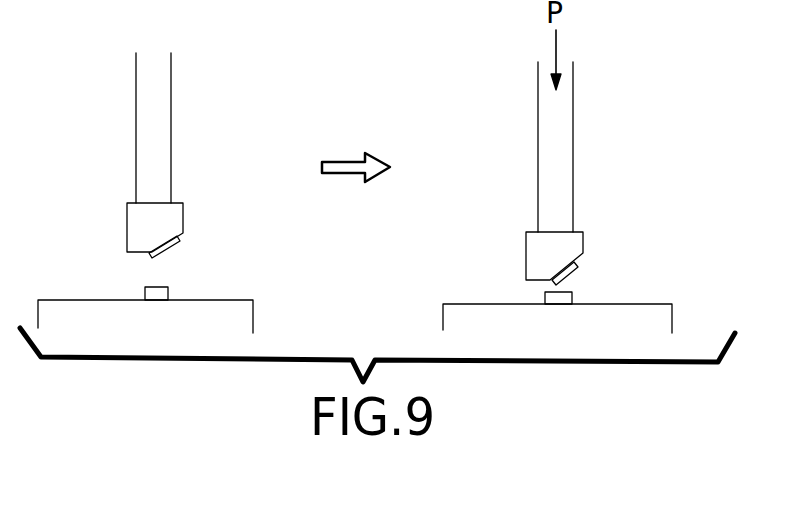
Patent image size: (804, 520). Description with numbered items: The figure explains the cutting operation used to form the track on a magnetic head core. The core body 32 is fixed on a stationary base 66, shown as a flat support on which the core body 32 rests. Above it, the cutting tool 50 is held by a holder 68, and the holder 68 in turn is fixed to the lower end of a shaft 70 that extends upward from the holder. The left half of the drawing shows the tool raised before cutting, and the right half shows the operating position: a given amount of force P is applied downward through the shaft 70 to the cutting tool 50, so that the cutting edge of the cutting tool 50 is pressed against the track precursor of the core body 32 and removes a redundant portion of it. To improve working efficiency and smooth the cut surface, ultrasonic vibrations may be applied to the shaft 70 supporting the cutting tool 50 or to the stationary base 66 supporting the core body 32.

The shaft 70 is at (157, 83).
The holder 68 is at (137, 228).
The cutting tool 50 is at (178, 241).
The core body 32 is at (145, 294).
The stationary base 66 is at (240, 317).